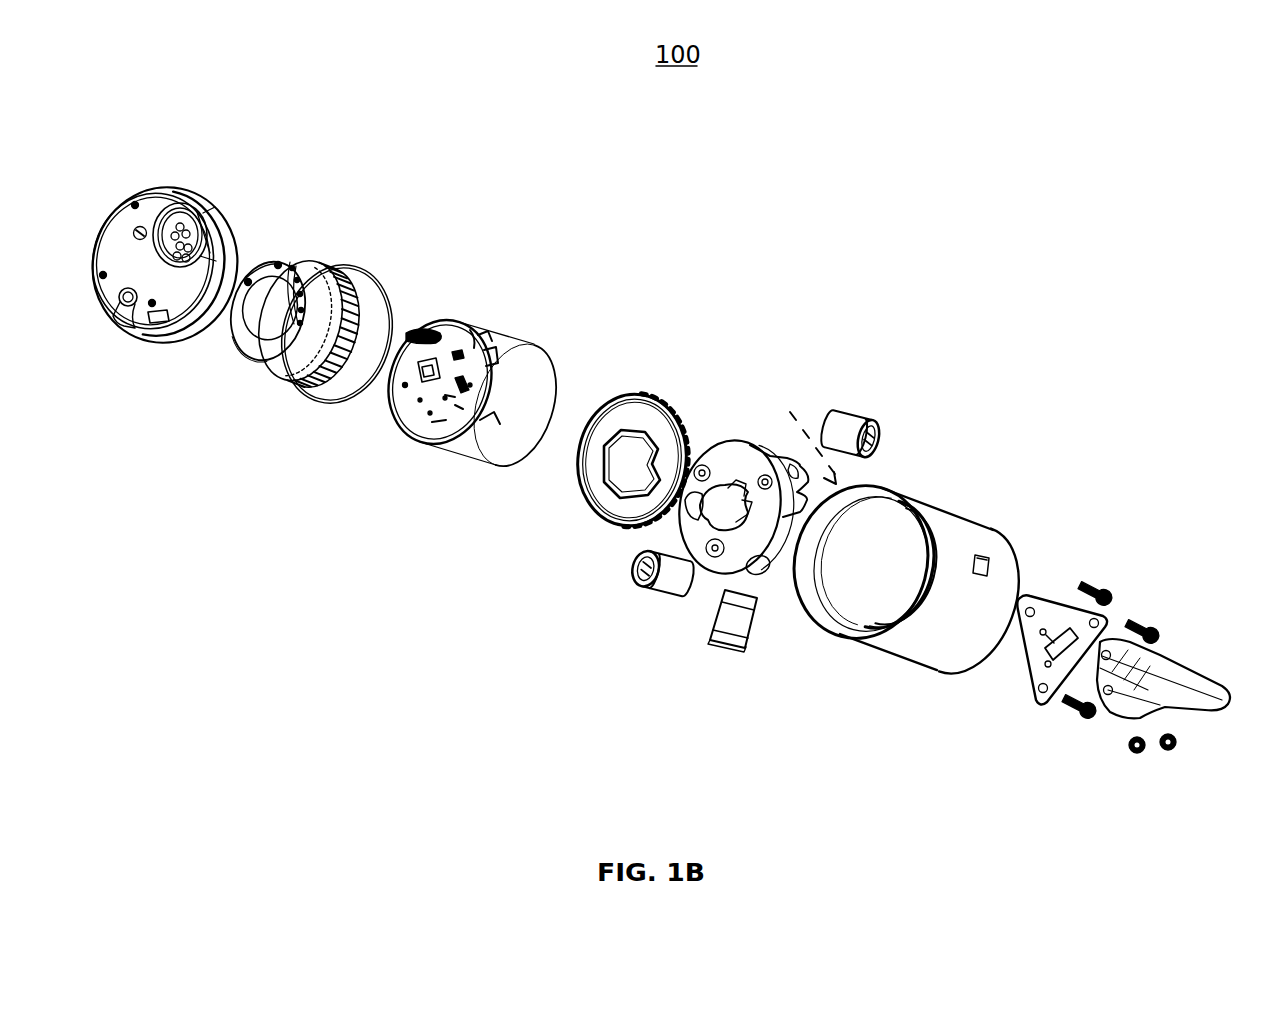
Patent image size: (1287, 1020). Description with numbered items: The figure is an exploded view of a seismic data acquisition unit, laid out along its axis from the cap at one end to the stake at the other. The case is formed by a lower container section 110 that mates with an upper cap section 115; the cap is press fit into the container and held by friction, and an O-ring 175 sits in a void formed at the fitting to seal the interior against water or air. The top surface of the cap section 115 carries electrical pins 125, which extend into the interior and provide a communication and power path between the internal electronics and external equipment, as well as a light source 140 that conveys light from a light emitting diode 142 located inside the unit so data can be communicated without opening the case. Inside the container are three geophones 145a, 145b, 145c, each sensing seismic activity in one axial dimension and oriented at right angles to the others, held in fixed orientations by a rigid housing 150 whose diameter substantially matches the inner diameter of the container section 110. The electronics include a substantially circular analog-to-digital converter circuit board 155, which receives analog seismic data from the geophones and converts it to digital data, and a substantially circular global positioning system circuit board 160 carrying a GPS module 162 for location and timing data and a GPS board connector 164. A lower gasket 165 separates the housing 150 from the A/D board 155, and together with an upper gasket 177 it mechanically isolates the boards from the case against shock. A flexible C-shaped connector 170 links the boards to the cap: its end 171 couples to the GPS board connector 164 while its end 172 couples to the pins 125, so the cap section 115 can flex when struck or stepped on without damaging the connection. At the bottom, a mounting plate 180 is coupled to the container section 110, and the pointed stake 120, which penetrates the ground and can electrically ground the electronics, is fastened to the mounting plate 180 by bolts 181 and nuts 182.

The lower container section 110 is at (957, 530).
The upper cap section 115 is at (214, 244).
The stake 120 is at (1200, 688).
The electrical pins 125 is at (197, 198).
The light source 140 is at (139, 240).
The light emitting diode 142 is at (398, 378).
The geophone 145a is at (847, 420).
The geophone 145b is at (722, 627).
The geophone 145c is at (666, 578).
The housing 150 is at (740, 452).
The analog-to-digital converter circuit board 155 is at (472, 443).
The global positioning system circuit board 160 is at (427, 367).
The GPS module 162 is at (483, 330).
The GPS board connector 164 is at (438, 323).
The lower gasket 165 is at (642, 397).
The flexible C-shaped connector 170 is at (263, 340).
The end of connector 171 is at (232, 296).
The end of connector 172 is at (303, 262).
The O-ring 175 is at (377, 283).
The upper gasket 177 is at (270, 378).
The mounting plate 180 is at (1050, 612).
The bolts 181 is at (1147, 622).
The nuts 182 is at (1167, 751).